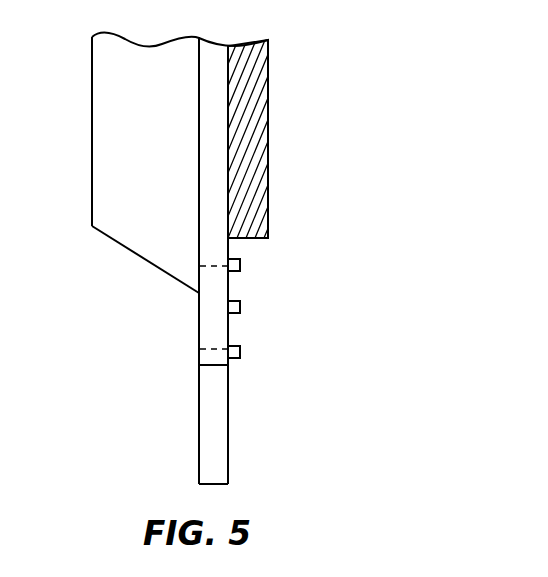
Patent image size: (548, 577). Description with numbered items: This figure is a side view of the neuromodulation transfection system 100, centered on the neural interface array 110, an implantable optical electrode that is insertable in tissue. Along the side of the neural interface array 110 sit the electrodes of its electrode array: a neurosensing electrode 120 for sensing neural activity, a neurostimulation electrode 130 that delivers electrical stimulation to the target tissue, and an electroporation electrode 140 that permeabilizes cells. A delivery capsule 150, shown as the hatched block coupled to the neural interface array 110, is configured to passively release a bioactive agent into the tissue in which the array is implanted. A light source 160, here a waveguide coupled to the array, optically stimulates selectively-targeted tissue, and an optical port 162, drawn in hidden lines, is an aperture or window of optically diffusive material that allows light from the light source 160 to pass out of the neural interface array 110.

The neuromodulation transfection system 100 is at (282, 429).
The neural interface array 110 is at (210, 409).
The neurosensing electrode 120 is at (240, 265).
The neurostimulation electrode 130 is at (240, 352).
The electroporation electrode 140 is at (240, 307).
The delivery capsule 150 is at (252, 153).
The light source 160 is at (147, 218).
The optical port 162 is at (213, 325).